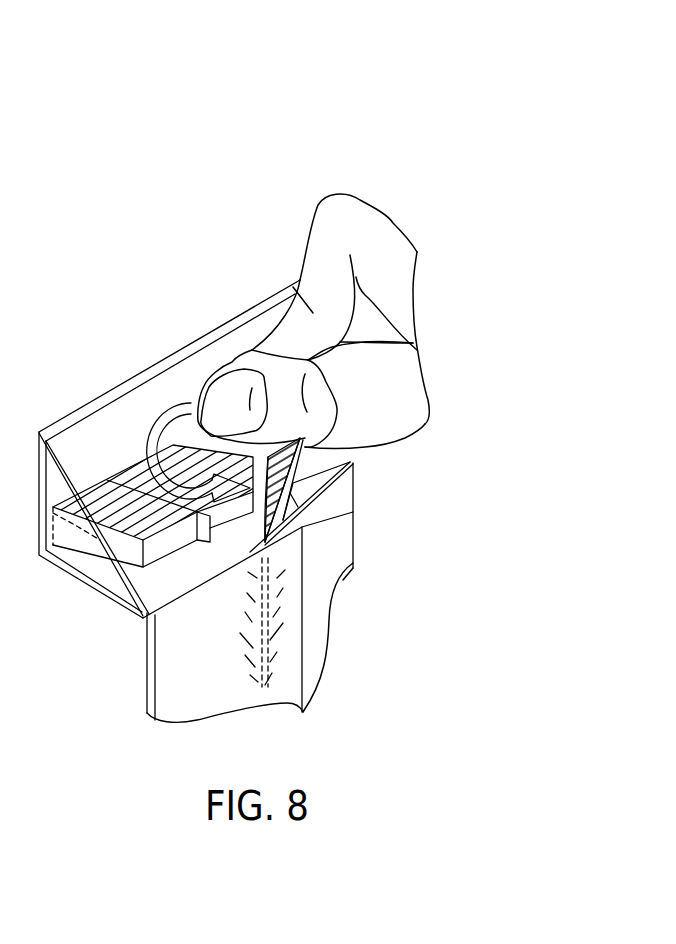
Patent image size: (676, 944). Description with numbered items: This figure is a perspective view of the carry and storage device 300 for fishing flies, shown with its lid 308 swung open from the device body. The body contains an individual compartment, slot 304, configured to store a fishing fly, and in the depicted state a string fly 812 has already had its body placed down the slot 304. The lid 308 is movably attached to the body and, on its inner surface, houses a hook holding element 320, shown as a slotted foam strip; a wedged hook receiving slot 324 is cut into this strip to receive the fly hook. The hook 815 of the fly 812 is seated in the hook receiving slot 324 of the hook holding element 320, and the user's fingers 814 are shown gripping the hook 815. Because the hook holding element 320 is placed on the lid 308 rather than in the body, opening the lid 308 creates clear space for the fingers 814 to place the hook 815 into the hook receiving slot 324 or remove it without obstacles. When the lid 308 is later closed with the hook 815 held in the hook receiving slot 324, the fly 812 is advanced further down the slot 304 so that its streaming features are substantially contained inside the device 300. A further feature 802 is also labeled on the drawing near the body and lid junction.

The carry and storage device 300 is at (291, 118).
The slot 304 is at (202, 703).
The lid 308 is at (108, 393).
The hook holding element 320 is at (83, 573).
The hook receiving slot 324 is at (268, 545).
The wedge flap 802 is at (330, 495).
The string fly 812 is at (280, 623).
The fingers 814 is at (424, 382).
The hook 815 is at (187, 400).